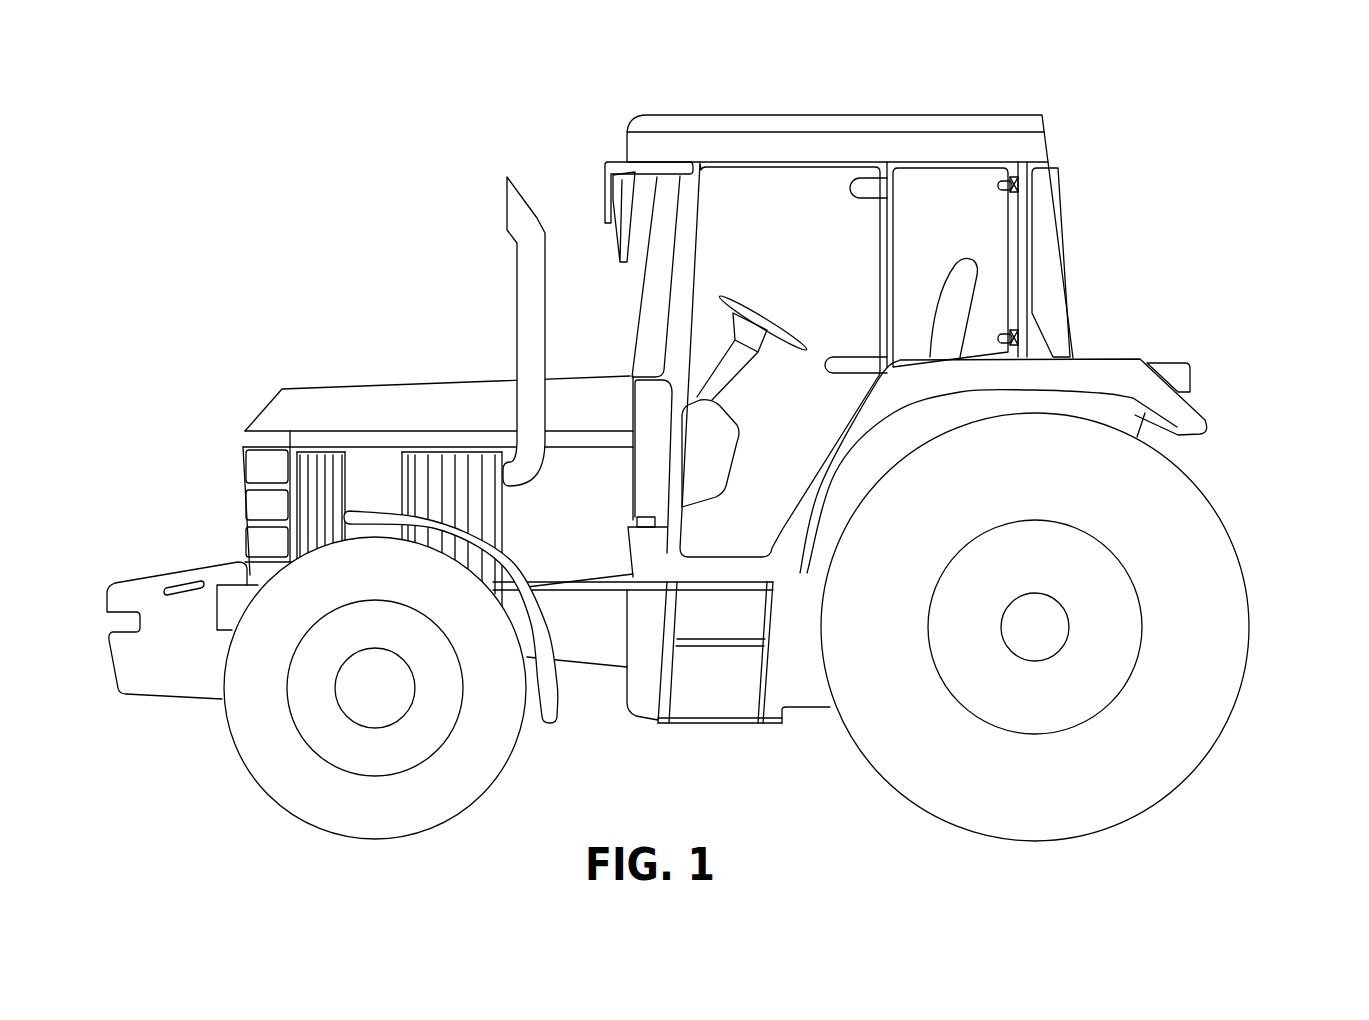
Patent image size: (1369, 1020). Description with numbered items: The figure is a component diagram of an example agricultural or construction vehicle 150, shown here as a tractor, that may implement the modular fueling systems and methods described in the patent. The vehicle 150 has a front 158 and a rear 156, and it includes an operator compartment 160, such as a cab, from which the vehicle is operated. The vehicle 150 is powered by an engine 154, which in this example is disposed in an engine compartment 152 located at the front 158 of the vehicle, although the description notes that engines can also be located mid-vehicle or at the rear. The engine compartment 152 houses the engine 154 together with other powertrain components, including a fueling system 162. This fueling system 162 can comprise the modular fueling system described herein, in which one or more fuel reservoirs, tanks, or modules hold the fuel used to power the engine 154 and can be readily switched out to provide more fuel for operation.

The agricultural or construction vehicle 150 is at (548, 142).
The engine compartment 152 is at (296, 347).
The engine 154 is at (345, 348).
The rear 156 is at (1212, 388).
The front 158 is at (207, 438).
The operator compartment 160 is at (778, 200).
The fueling system 162 is at (507, 347).